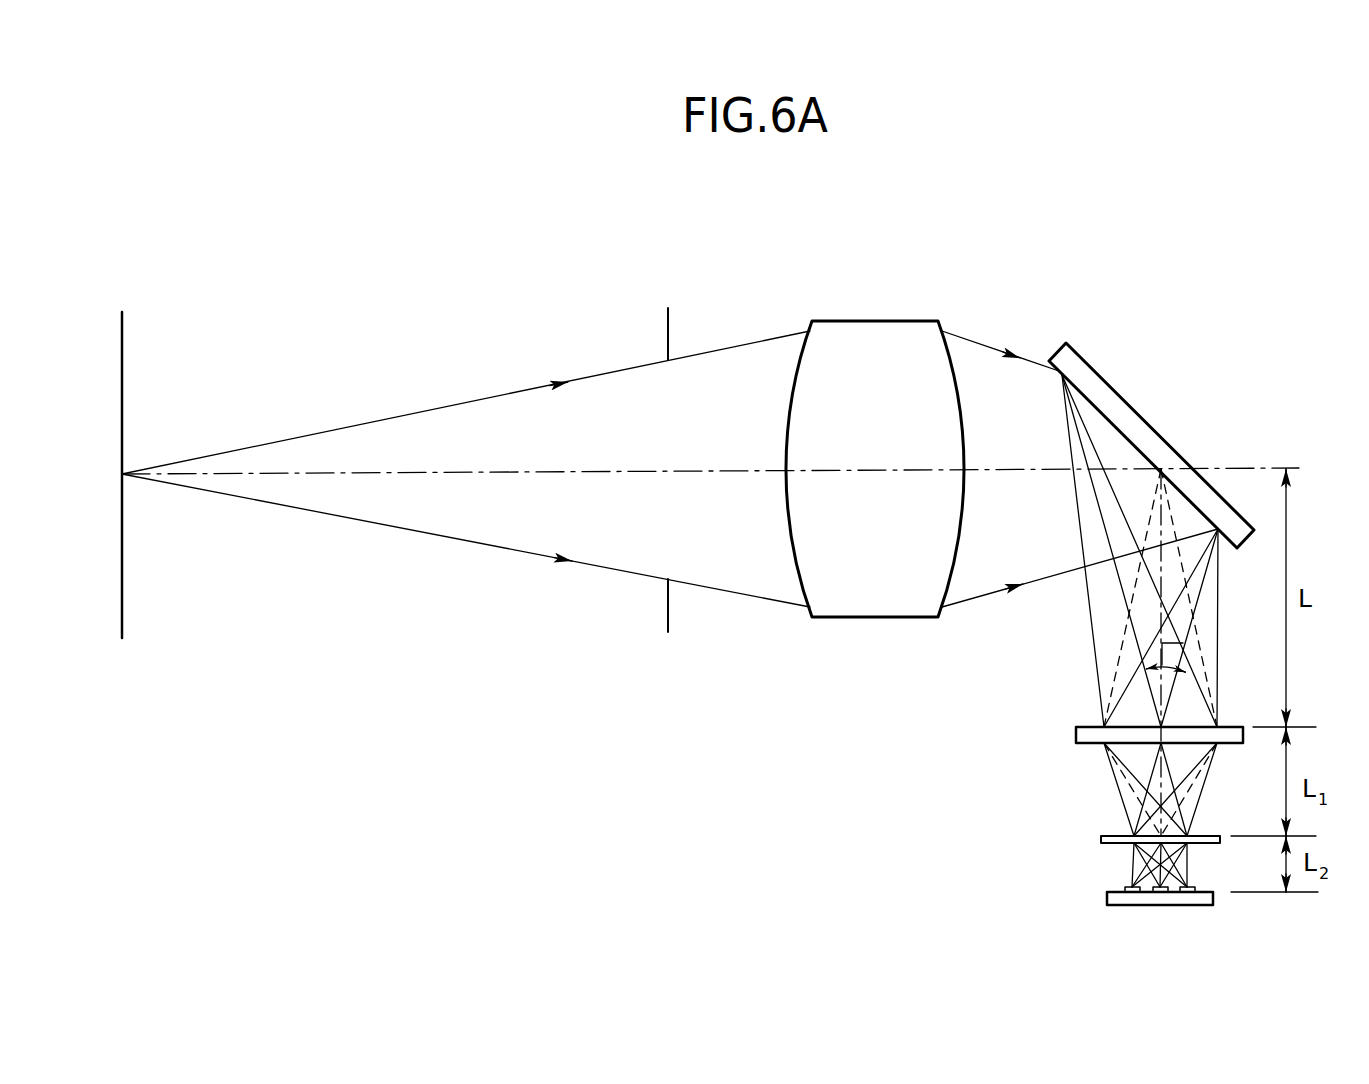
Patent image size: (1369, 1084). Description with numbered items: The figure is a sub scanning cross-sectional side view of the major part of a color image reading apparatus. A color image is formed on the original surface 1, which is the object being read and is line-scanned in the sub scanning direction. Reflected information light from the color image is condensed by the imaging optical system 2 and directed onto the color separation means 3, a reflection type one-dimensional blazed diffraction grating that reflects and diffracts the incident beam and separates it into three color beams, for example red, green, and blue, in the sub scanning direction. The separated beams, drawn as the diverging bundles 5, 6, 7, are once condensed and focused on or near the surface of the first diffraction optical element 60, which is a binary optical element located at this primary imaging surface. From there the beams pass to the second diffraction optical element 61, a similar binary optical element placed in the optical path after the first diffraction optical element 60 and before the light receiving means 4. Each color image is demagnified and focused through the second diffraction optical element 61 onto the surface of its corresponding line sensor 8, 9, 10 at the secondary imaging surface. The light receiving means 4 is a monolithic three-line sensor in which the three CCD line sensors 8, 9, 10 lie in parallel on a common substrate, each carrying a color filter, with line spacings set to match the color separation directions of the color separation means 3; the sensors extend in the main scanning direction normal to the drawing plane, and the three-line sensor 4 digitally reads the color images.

The original surface 1 is at (122, 341).
The imaging optical system 2 is at (945, 270).
The color separation means 3 is at (1117, 395).
The light receiving means 4 is at (1107, 898).
The reflected light beam (upper) 5 is at (1093, 633).
The principal ray / optical axis beam 6 is at (1183, 643).
The reflected light beam (lower) 7 is at (1220, 590).
The line sensor 8 is at (1132, 892).
The line sensor 9 is at (1160, 892).
The line sensor 10 is at (1187, 892).
The first diffraction optical element 60 is at (1076, 737).
The second diffraction optical element 61 is at (1101, 839).